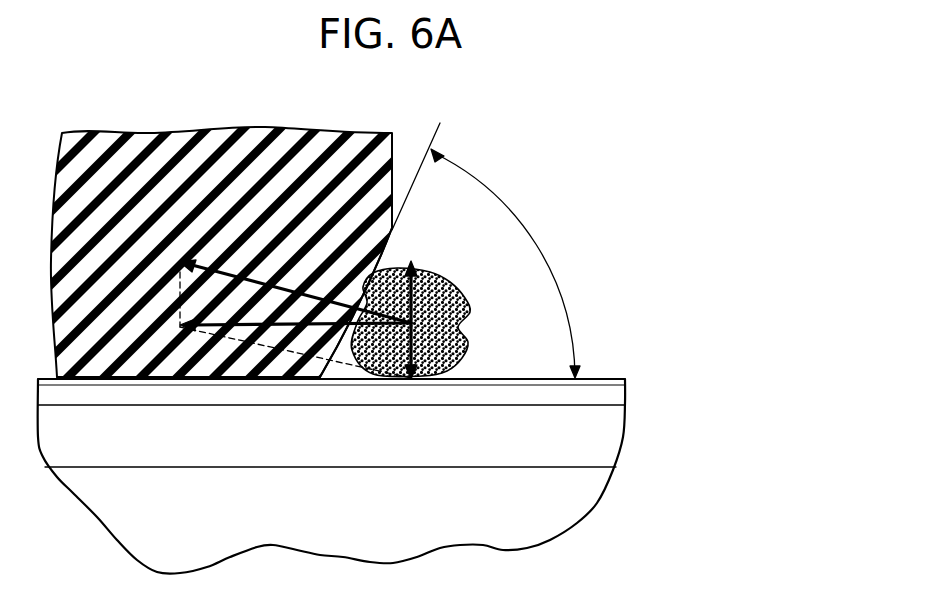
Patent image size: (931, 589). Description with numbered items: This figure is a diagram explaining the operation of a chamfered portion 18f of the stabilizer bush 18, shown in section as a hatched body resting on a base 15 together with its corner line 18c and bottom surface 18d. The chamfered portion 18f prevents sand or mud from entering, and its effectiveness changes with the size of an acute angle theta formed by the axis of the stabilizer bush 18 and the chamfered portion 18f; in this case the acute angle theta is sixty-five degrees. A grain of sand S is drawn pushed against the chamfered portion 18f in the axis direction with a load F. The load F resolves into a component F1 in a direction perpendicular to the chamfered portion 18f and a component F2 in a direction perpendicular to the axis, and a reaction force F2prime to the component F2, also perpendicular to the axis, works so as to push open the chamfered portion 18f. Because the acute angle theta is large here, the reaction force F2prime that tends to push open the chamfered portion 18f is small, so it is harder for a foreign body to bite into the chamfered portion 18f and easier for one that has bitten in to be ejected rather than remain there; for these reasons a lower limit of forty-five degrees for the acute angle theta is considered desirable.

The substrate 15 is at (362, 518).
The stabilizer bush 18 is at (175, 128).
The blade edge line 18c is at (394, 157).
The chamfered portion 18f is at (392, 245).
The blade bottom surface 18d is at (176, 380).
The acute angle theta is at (520, 263).
The sand S is at (475, 309).
The component F1 is at (270, 285).
The load F is at (258, 328).
The reaction force F2prime is at (450, 284).
The component F2 is at (452, 350).